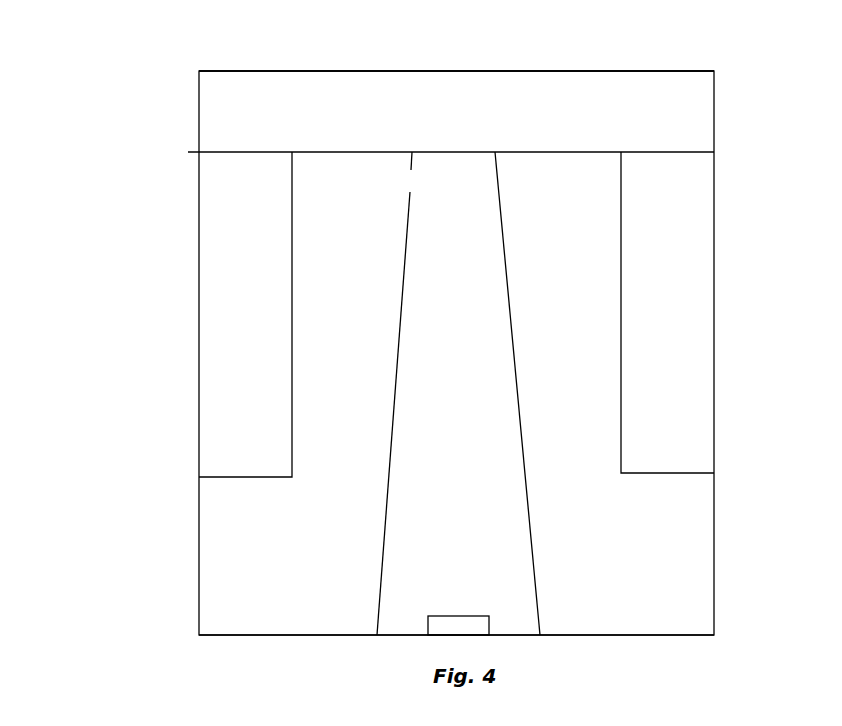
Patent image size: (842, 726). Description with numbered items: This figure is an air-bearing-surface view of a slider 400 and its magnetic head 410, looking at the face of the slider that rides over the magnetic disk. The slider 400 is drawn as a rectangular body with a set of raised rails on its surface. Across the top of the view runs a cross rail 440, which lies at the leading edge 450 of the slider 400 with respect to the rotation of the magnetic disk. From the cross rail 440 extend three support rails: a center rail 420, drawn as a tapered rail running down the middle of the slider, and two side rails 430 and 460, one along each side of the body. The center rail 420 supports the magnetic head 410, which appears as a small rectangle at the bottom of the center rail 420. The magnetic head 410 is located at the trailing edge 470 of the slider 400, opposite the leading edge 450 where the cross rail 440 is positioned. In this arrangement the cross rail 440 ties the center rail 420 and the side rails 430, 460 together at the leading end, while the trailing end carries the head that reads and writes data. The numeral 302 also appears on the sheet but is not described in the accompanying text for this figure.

The substrate 302 is at (701, 9).
The slider 400 is at (64, 594).
The magnetic head 410 is at (448, 625).
The center rail 420 is at (427, 465).
The side rail 430 is at (242, 283).
The cross rail 440 is at (240, 103).
The leading edge 450 is at (268, 71).
The side rail 460 is at (693, 302).
The trailing edge 470 is at (622, 635).